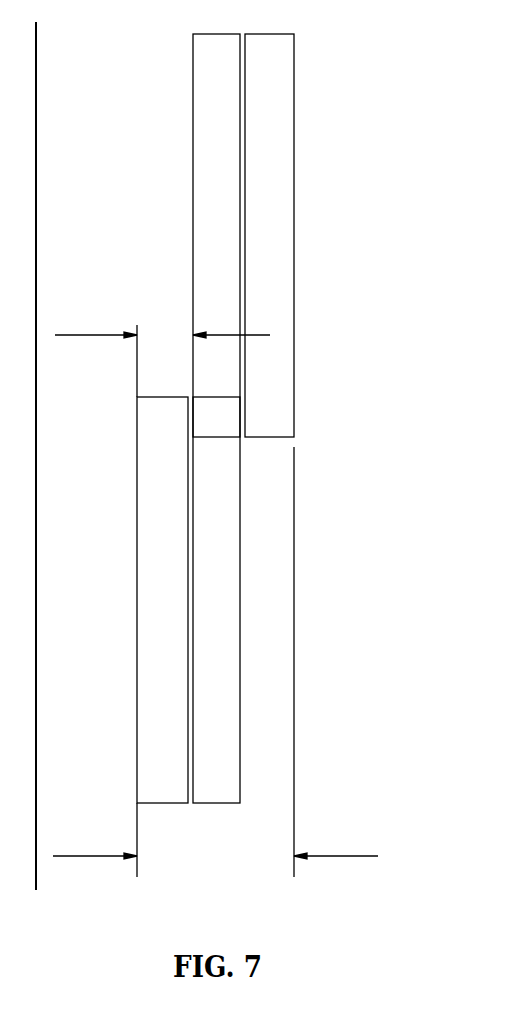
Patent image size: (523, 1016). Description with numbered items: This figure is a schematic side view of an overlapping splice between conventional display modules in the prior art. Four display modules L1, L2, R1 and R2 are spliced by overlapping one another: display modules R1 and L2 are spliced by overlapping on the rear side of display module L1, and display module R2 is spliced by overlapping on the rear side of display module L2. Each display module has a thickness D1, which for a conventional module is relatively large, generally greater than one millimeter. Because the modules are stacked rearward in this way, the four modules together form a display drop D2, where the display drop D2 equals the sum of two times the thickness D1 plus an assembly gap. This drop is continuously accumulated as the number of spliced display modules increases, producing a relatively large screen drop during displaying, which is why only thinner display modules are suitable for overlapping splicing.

The display module L1 is at (162, 600).
The display module R1 is at (216, 600).
The display module L2 is at (216, 235).
The display module R2 is at (269, 235).
The thickness of each display module D1 is at (162, 336).
The display drop D2 is at (215, 662).